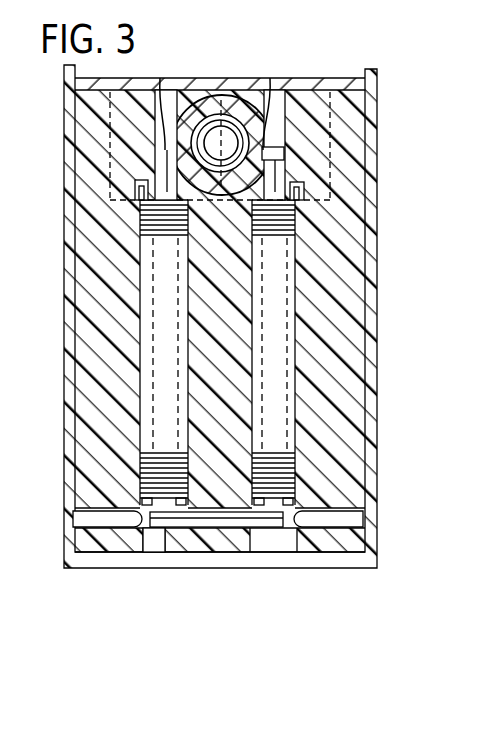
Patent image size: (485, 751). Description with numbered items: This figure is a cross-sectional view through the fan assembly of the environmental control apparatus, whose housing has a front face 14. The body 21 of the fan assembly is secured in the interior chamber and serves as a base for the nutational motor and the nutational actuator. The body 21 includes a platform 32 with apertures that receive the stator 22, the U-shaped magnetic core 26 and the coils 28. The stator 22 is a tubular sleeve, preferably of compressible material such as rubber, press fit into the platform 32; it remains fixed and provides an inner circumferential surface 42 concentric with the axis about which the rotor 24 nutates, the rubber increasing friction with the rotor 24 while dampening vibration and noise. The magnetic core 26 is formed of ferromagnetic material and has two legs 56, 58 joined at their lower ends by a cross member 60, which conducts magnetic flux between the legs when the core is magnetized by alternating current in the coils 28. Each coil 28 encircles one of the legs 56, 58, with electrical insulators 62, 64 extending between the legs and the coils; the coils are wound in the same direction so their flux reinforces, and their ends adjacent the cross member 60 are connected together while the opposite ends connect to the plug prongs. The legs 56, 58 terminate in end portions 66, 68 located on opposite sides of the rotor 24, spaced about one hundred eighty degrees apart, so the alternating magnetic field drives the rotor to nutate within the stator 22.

The front face 14 is at (377, 240).
The body 21 is at (348, 397).
The stator 22 is at (229, 126).
The rotor 24 is at (207, 128).
The U-shaped magnetic core 26 is at (177, 528).
The coils 28 is at (161, 341).
The platform 32 is at (343, 293).
The inner circumferential surface 42 is at (284, 160).
The leg 56 is at (352, 183).
The leg 58 is at (158, 167).
The cross member 60 is at (170, 530).
The electrical insulator 62 is at (333, 507).
The electrical insulator 64 is at (140, 507).
The end portion 66 is at (270, 78).
The end portion 68 is at (160, 78).